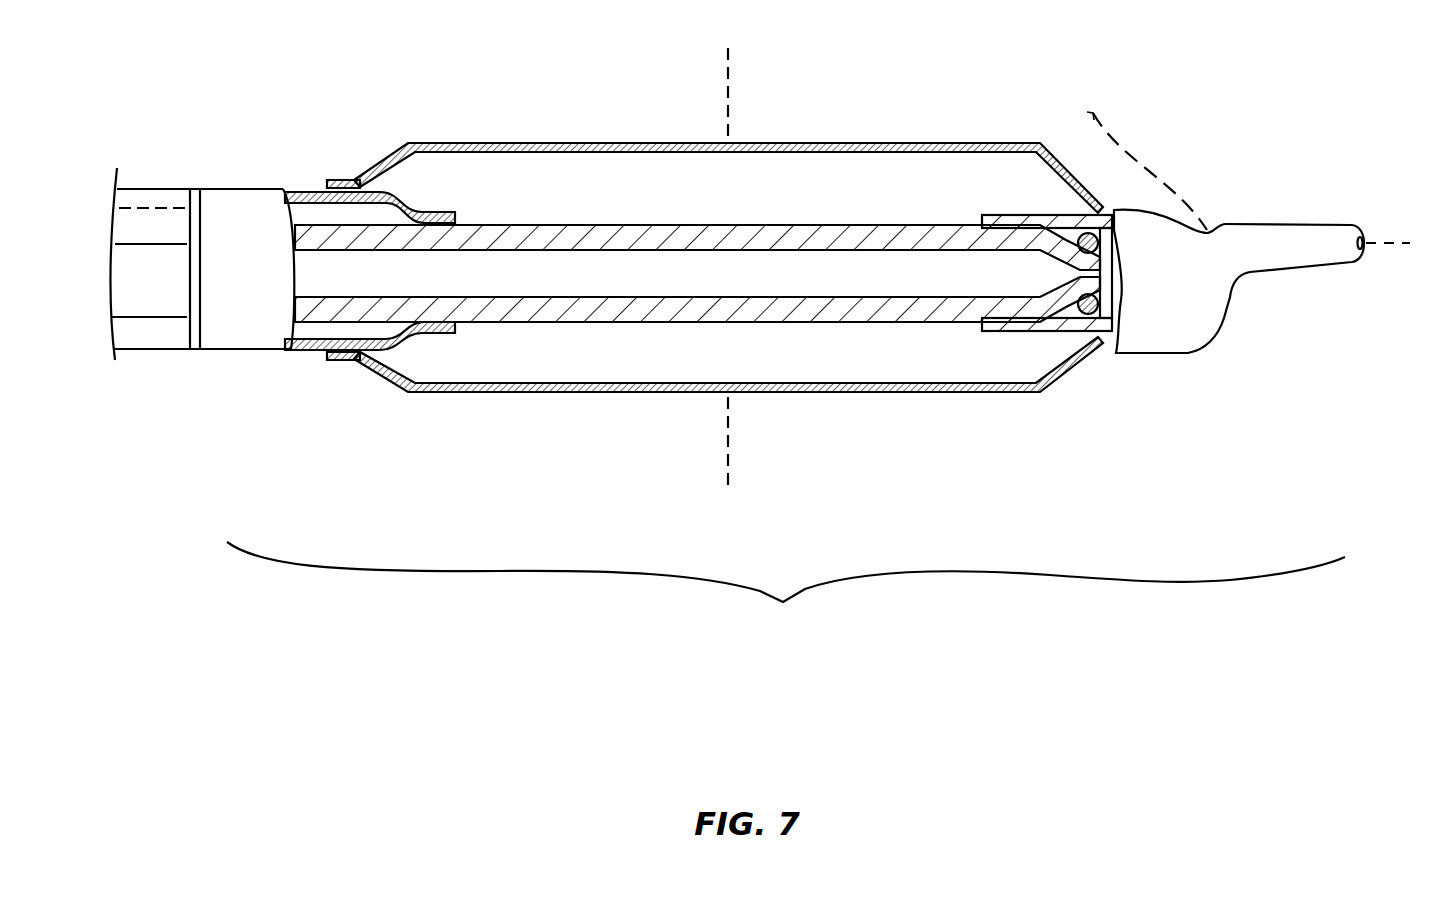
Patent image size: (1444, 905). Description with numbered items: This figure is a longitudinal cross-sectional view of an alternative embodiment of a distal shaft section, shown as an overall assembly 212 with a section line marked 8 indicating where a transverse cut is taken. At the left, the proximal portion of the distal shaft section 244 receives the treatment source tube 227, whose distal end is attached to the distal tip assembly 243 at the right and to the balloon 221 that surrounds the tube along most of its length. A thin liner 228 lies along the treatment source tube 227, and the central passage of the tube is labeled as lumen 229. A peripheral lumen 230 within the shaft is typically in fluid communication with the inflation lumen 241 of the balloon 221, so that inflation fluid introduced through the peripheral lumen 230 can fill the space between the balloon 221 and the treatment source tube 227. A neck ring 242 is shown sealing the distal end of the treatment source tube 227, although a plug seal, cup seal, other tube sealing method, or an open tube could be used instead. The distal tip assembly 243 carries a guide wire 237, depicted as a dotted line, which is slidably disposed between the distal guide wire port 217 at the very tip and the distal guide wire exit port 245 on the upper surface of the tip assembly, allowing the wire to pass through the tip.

The distal assembly 212 is at (786, 598).
The distal guide wire port 217 is at (1362, 233).
The balloon 221 is at (835, 147).
The treatment source tube 227 is at (885, 313).
The liner tube 228 is at (318, 348).
The lumen 229 is at (762, 290).
The peripheral lumen 230 is at (300, 347).
The guide wire 237 is at (1094, 112).
The inflation lumen 241 is at (762, 365).
The neck ring 242 is at (1097, 347).
The distal tip assembly 243 is at (1183, 307).
The distal shaft section 244 is at (218, 203).
The distal guide wire exit port 245 is at (1220, 225).
The section line 8- 8 is at (728, 45).